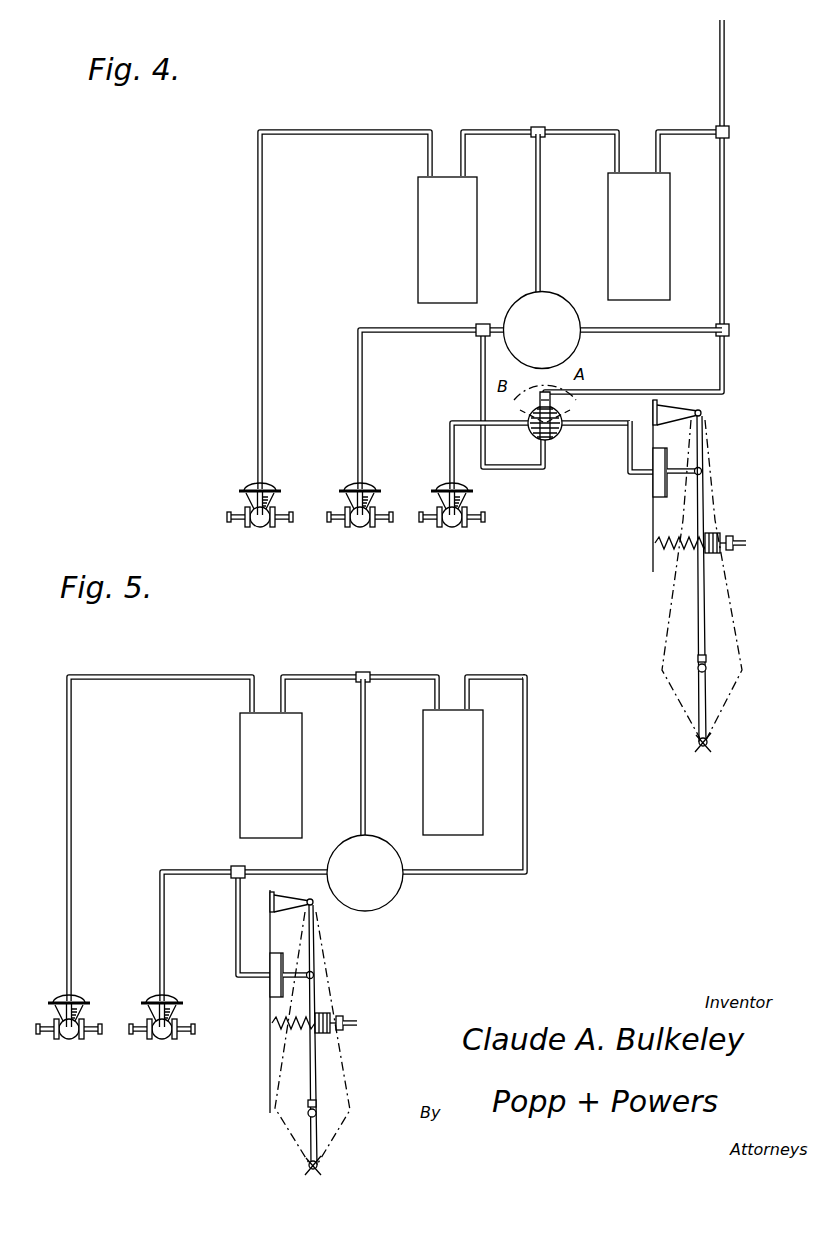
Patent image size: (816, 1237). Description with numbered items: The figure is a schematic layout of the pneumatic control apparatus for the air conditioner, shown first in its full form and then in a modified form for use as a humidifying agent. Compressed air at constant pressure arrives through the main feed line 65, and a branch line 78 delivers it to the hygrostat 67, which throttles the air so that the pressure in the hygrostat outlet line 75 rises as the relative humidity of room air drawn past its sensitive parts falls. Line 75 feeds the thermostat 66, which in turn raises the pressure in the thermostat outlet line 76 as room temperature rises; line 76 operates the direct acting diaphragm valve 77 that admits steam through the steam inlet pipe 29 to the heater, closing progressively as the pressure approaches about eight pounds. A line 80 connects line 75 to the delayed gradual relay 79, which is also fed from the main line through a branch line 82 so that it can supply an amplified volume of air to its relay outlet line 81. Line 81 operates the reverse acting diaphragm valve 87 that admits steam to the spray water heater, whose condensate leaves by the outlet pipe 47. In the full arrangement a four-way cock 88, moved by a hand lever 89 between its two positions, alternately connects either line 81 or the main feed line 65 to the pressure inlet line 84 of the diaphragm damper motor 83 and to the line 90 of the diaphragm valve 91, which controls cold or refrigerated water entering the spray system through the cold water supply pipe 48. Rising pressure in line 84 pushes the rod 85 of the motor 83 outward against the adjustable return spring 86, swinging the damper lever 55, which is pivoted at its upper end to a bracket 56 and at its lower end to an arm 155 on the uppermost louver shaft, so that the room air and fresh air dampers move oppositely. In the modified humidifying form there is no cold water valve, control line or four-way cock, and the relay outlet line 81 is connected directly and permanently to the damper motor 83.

In FIG. 4, the steam inlet pipe 29 is at (235, 520).
In FIG. 5, the steam inlet pipe 29 is at (44, 1034).
In FIG. 4, the outlet pipe 47 is at (337, 520).
In FIG. 5, the outlet pipe 47 is at (140, 1032).
In FIG. 4, the cold or refrigerated water supply pipe 48 is at (427, 520).
In FIG. 4, the lever 55 is at (698, 631).
In FIG. 5, the lever 55 is at (320, 1070).
In FIG. 4, the bracket 56 is at (704, 412).
In FIG. 5, the bracket 56 is at (316, 905).
In FIG. 4, the main feed line 65 is at (726, 245).
In FIG. 5, the main feed line 65 is at (530, 750).
In FIG. 4, the thermostat 66 is at (447, 240).
In FIG. 5, the thermostat 66 is at (271, 775).
In FIG. 4, the hygrostat 67 is at (639, 236).
In FIG. 5, the hygrostat 67 is at (453, 772).
In FIG. 4, the hygrostat outlet line 75 is at (572, 129).
In FIG. 5, the hygrostat outlet line 75 is at (405, 672).
In FIG. 4, the thermostat outlet line 76 is at (262, 258).
In FIG. 5, the thermostat outlet line 76 is at (71, 737).
In FIG. 4, the diaphragm valve 77 is at (270, 490).
In FIG. 5, the diaphragm valve 77 is at (80, 1001).
In FIG. 4, the branch line 78 is at (682, 128).
In FIG. 5, the branch line 78 is at (487, 672).
In FIG. 4, the relay 79 is at (542, 330).
In FIG. 5, the relay 79 is at (365, 873).
In FIG. 4, the line 80 is at (541, 228).
In FIG. 5, the line 80 is at (366, 763).
In FIG. 4, the relay outlet line 81 is at (363, 392).
In FIG. 5, the relay outlet line 81 is at (234, 900).
In FIG. 4, the branch line 82 is at (632, 332).
In FIG. 5, the branch line 82 is at (438, 877).
In FIG. 4, the diaphragm damper motor 83 is at (655, 487).
In FIG. 5, the diaphragm damper motor 83 is at (272, 994).
In FIG. 4, the pressure inlet line 84 is at (591, 427).
In FIG. 4, the rod 85 is at (705, 470).
In FIG. 5, the rod 85 is at (315, 972).
In FIG. 4, the adjustable return spring 86 is at (654, 543).
In FIG. 5, the adjustable return spring 86 is at (271, 1025).
In FIG. 4, the reverse acting diaphragm valve 87 is at (370, 490).
In FIG. 5, the reverse acting diaphragm valve 87 is at (172, 1000).
In FIG. 4, the four-way cock 88 is at (553, 440).
In FIG. 4, the hand lever 89 is at (553, 395).
In FIG. 4, the line 90 is at (450, 428).
In FIG. 4, the diaphragm valve 91 is at (470, 490).
In FIG. 4, the arm 155 is at (708, 740).
In FIG. 5, the arm 155 is at (318, 1152).